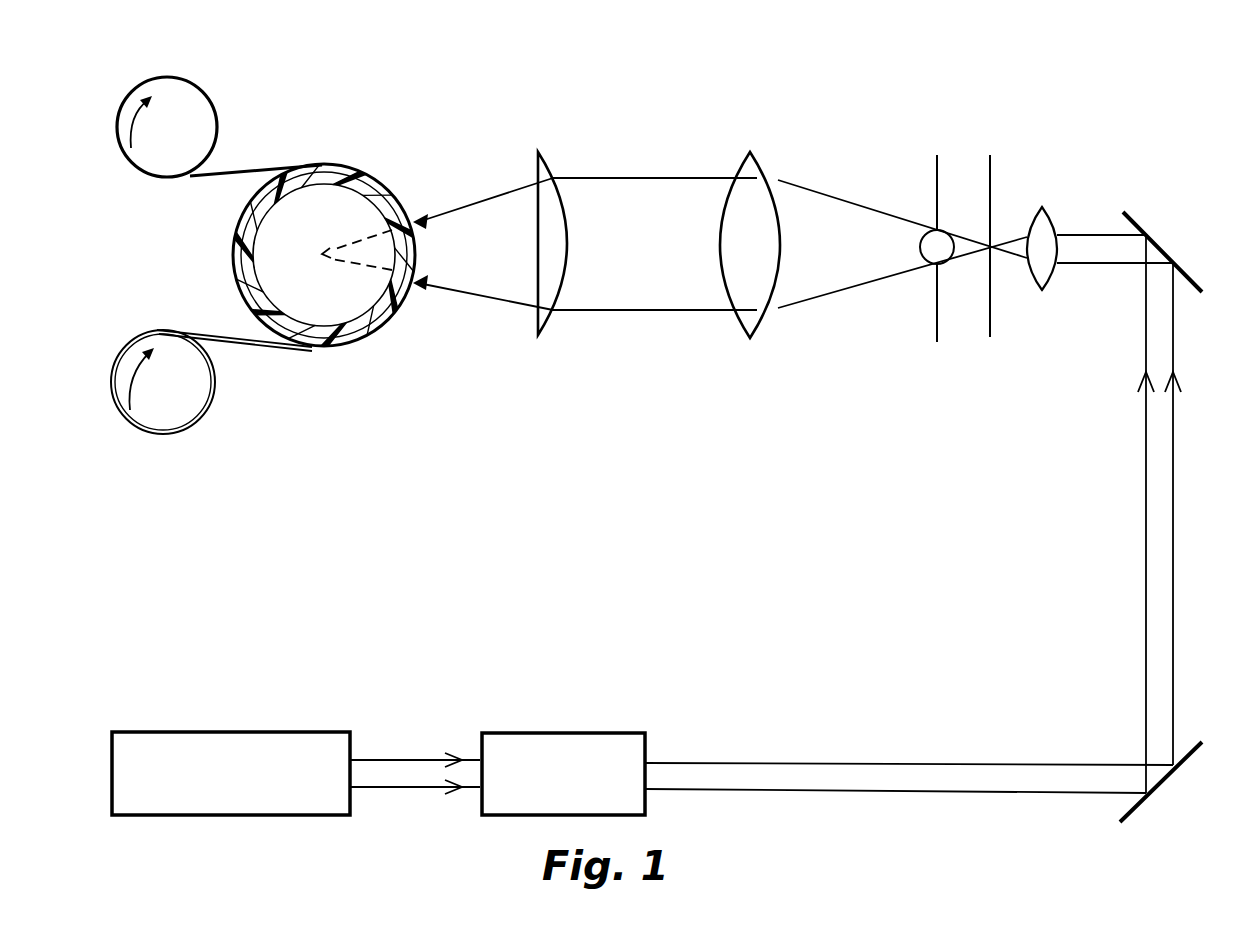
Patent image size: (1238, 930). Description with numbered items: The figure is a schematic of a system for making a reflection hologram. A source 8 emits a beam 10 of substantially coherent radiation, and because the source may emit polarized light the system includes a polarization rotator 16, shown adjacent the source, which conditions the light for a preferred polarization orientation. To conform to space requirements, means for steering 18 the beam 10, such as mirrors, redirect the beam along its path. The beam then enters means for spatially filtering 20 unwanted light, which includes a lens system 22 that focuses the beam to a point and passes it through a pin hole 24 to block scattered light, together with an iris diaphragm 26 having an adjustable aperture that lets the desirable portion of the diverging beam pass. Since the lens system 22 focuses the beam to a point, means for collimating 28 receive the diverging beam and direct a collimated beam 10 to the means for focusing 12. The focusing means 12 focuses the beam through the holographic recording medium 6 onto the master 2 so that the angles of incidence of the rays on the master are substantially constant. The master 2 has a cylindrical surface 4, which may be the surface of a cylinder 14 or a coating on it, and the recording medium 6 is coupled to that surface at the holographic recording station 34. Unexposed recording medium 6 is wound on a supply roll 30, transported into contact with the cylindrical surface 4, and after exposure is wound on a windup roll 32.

The master 2 is at (238, 231).
The cylindrical surface 4 is at (240, 280).
The holographic recording medium 6 is at (250, 170).
The source 8 is at (203, 732).
The beam 10 is at (661, 170).
The means for focusing 12 is at (553, 352).
The cylinder 14 is at (256, 283).
The polarization rotator 16 is at (548, 733).
The means for steering 18 is at (1178, 248).
The means for spatially filtering 20 is at (1080, 125).
The lens system 22 is at (1046, 285).
The pin hole 24 is at (990, 330).
The iris diaphragm 26 is at (937, 330).
The means for collimating 28 is at (765, 320).
The supply roll 30 is at (177, 401).
The windup roll 32 is at (177, 146).
The holographic recording station 34 is at (343, 388).